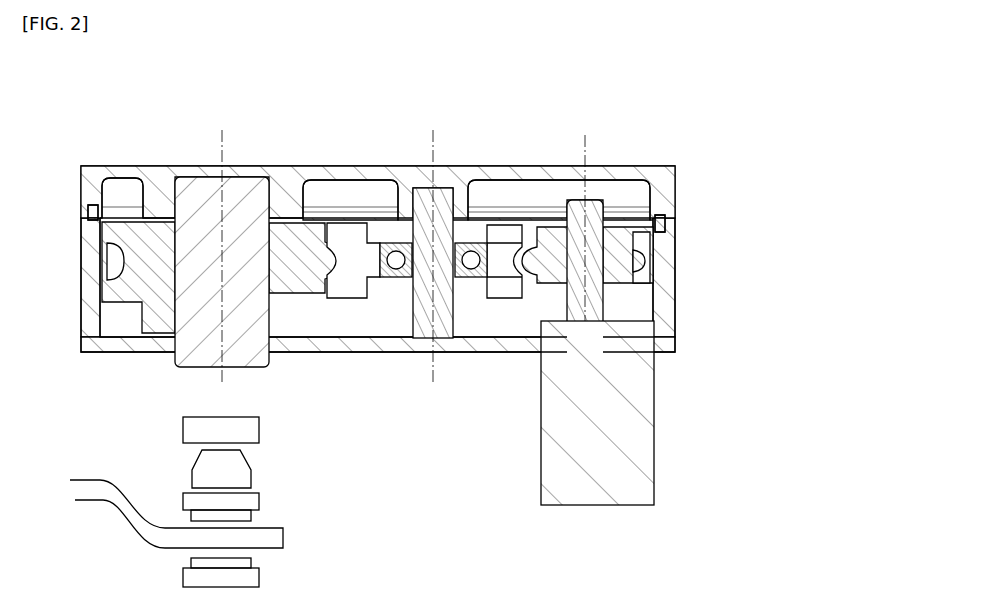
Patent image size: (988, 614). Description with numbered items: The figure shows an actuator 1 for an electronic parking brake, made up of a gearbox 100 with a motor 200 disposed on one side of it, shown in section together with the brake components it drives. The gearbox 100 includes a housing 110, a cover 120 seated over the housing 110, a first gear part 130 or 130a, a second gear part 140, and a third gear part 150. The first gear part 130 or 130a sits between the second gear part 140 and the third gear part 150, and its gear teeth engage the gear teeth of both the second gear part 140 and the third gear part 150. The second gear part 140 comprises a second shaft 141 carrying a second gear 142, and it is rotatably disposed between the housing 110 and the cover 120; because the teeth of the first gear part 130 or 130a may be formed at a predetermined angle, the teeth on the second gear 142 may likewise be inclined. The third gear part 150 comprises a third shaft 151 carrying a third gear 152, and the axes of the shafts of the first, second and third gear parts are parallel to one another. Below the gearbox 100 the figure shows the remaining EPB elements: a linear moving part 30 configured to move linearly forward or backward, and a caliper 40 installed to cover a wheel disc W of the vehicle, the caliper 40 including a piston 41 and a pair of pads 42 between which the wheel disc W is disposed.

The actuator 1 is at (403, 329).
The gearbox 100 is at (403, 266).
The housing 110 is at (82, 306).
The cover 120 is at (286, 166).
The first gear part 130 is at (436, 249).
The first gear part 130a is at (465, 228).
The second gear part 140 is at (649, 260).
The second shaft 141 is at (592, 318).
The second gear 142 is at (632, 250).
The third gear part 150 is at (208, 287).
The third shaft 151 is at (193, 312).
The third gear 152 is at (133, 284).
The motor 200 is at (638, 403).
The linear moving part 30 is at (260, 432).
The caliper 40 is at (267, 520).
The piston 41 is at (252, 478).
The pads 42 is at (260, 506).
The wheel disc W is at (128, 521).